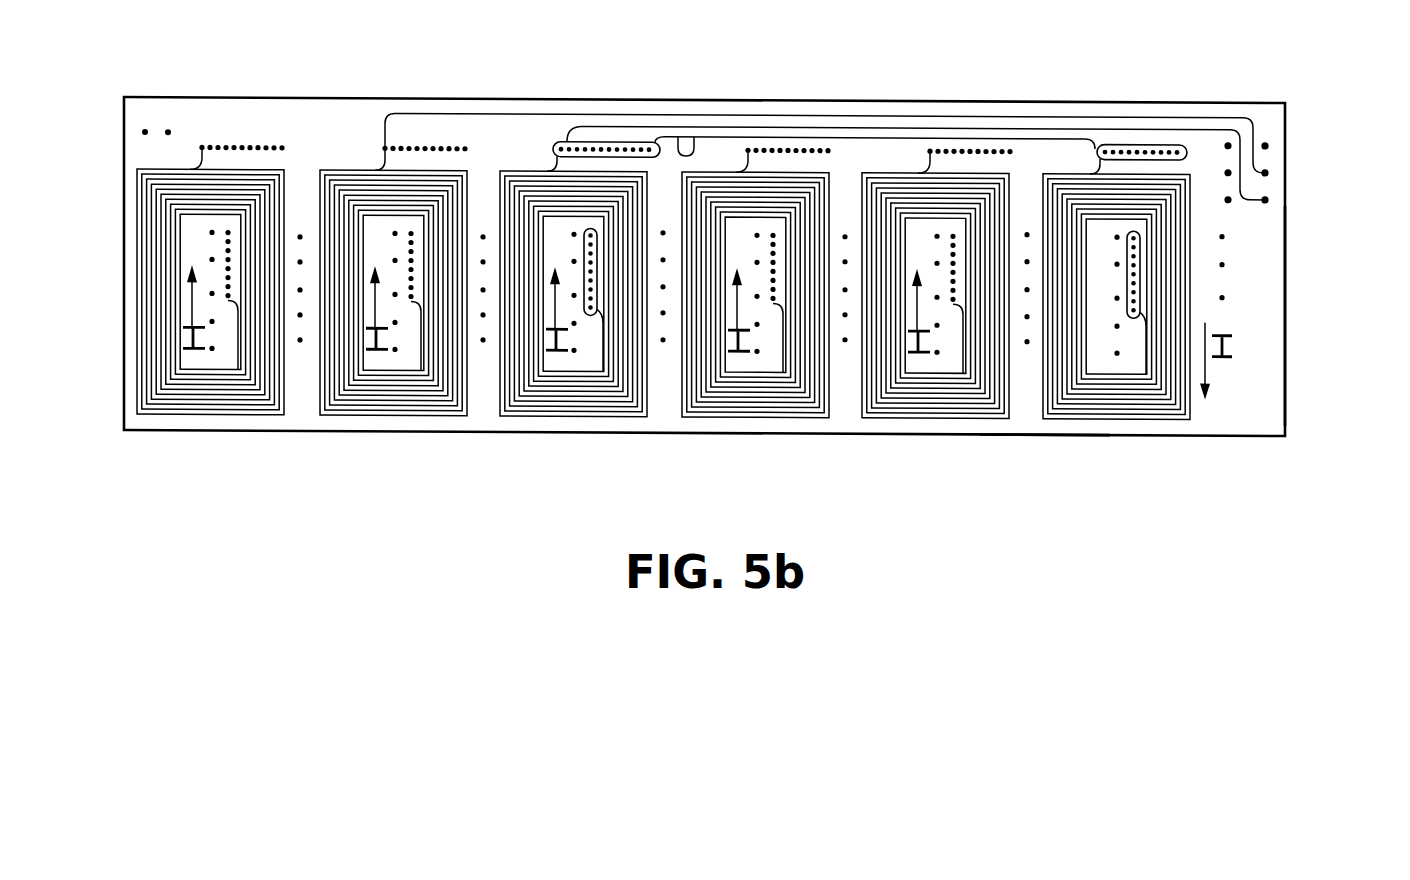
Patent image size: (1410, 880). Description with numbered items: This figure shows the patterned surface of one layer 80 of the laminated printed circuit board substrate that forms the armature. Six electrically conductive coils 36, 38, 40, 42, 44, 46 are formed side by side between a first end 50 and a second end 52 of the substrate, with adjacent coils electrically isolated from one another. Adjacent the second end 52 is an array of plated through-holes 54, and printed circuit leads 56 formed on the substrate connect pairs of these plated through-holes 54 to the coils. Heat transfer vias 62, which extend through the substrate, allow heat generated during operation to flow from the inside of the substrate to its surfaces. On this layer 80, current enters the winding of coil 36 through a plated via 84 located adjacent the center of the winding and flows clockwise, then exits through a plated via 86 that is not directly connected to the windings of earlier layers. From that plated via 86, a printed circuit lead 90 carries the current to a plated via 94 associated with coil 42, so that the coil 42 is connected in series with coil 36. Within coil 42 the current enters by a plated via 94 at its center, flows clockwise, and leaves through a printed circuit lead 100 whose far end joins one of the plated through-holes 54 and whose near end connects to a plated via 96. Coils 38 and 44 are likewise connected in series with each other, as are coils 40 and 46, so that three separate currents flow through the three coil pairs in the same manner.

The coil 36 is at (1120, 282).
The coil 38 is at (862, 390).
The coil 40 is at (682, 398).
The coil 42 is at (540, 330).
The coil 44 is at (320, 392).
The coil 46 is at (137, 392).
The first end 50 is at (122, 338).
The second end 52 is at (1285, 286).
The plated through-holes 54 is at (1228, 194).
The printed circuit leads 56 is at (1253, 126).
The heat transfer vias 62 is at (300, 232).
The layer 80 is at (1048, 430).
The plated via 84 is at (1128, 228).
The plated via 86 is at (1160, 138).
The printed circuit lead 90 is at (688, 134).
The plated via 94 is at (595, 312).
The plated via 96 is at (563, 140).
The printed circuit lead 100 is at (781, 121).